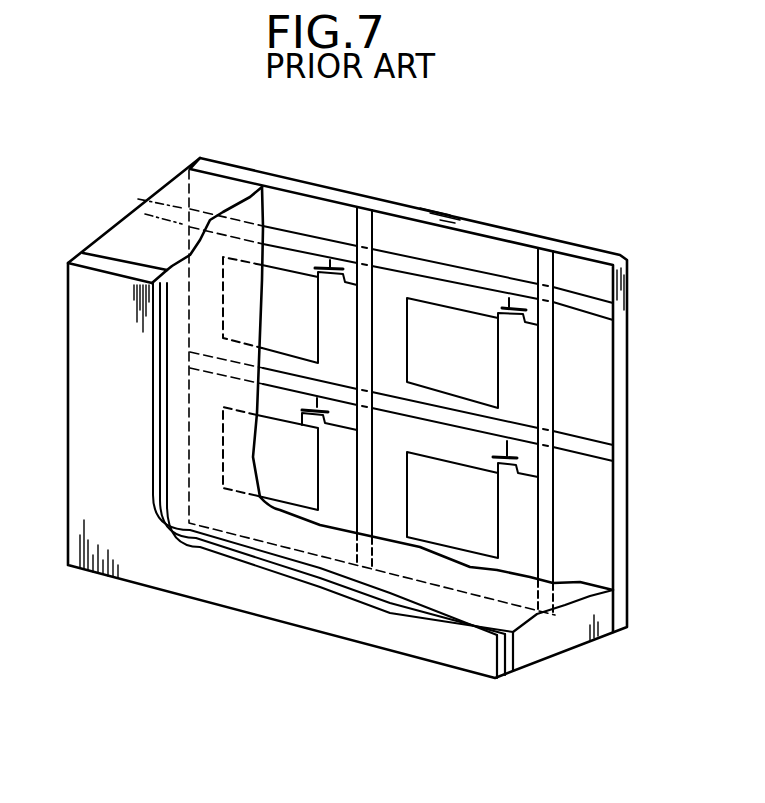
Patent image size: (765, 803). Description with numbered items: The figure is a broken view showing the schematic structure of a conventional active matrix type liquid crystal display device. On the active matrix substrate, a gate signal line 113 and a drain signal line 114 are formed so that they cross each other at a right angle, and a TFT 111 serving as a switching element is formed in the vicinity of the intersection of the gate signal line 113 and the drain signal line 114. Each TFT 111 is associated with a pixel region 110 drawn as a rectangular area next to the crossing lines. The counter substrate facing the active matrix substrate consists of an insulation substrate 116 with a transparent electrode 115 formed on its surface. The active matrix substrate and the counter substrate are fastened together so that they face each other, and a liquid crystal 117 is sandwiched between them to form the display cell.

The pixel electrode 110 is at (488, 388).
The TFT 111 is at (505, 300).
The gate signal line 113 is at (600, 310).
The drain signal line 114 is at (547, 271).
The transparent electrode 115 is at (117, 257).
The insulation substrate 116 is at (120, 273).
The liquid crystal 117 is at (548, 643).